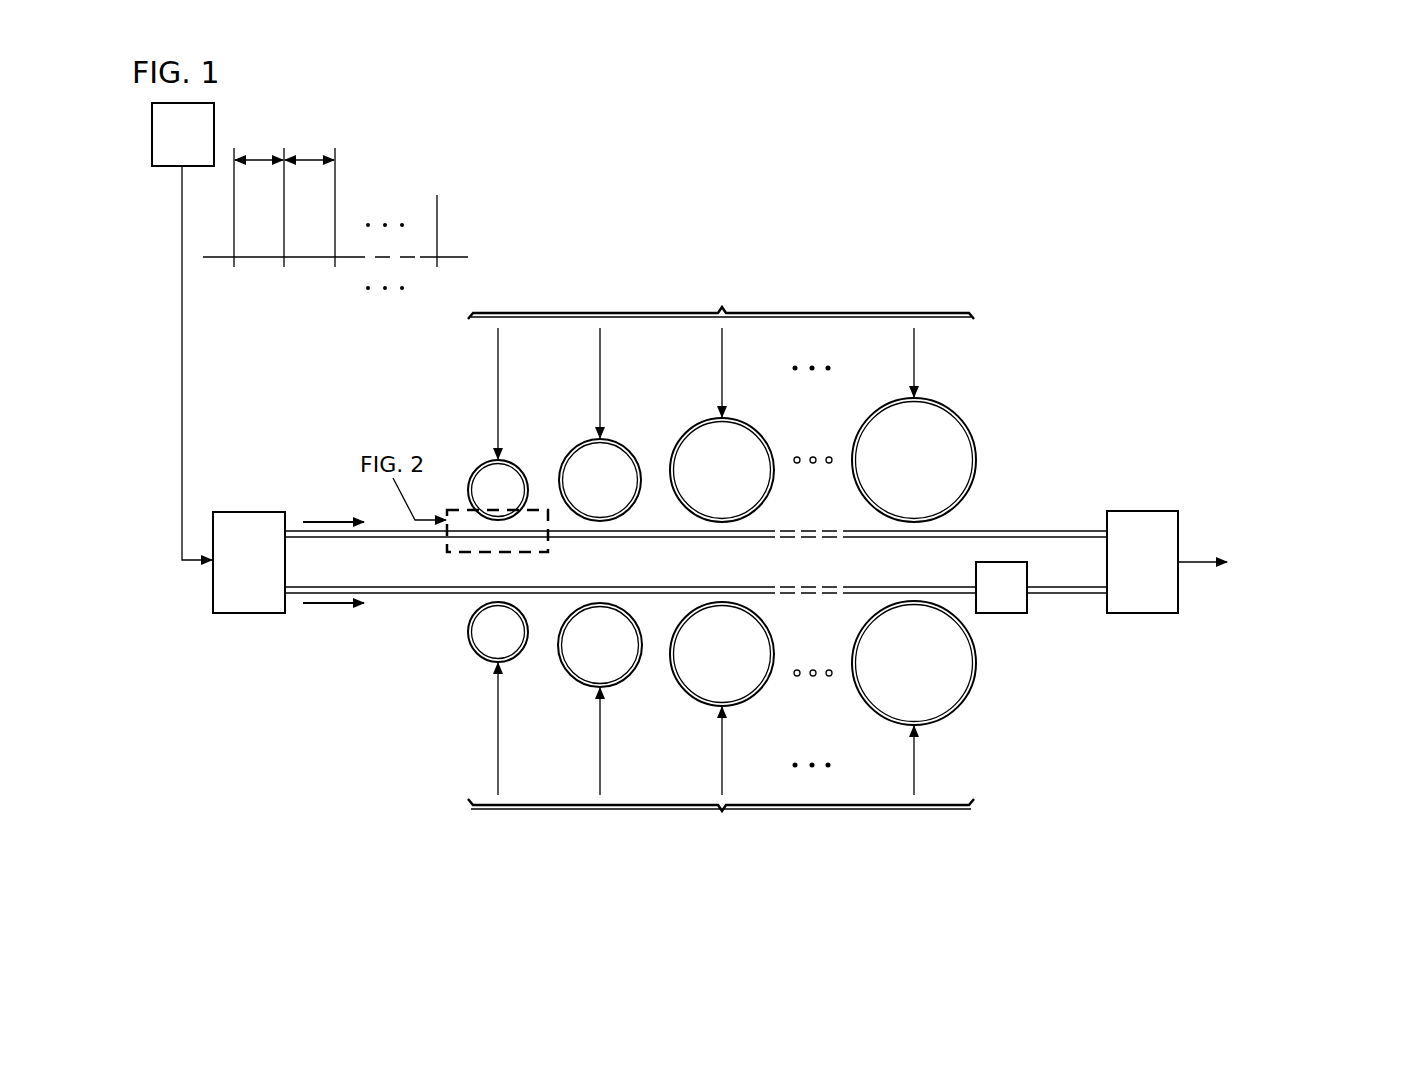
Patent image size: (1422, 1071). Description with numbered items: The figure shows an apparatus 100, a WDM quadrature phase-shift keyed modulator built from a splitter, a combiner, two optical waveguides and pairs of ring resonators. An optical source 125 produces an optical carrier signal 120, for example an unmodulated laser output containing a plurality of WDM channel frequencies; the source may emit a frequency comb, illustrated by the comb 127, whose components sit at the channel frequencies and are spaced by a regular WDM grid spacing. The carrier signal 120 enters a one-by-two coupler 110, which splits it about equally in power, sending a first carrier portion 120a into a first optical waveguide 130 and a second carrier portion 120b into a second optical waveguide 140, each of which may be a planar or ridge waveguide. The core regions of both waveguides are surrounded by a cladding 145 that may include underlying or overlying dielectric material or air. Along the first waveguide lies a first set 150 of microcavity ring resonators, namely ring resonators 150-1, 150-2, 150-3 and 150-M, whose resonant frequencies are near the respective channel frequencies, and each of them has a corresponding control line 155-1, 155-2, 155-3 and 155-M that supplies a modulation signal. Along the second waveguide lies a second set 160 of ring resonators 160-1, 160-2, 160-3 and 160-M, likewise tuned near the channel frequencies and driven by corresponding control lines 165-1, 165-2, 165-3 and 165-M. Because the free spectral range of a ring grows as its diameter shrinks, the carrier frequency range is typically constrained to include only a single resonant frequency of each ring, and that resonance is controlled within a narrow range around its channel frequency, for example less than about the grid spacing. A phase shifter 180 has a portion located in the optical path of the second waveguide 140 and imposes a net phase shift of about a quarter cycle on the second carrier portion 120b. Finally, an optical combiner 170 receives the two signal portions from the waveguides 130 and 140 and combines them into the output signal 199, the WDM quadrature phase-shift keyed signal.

The apparatus 100 is at (977, 232).
The optical source 125 is at (170, 145).
The optical carrier signal 120 is at (182, 365).
The comb 127 is at (366, 143).
The 1×2 coupler 110 is at (236, 572).
The first carrier portion 120a is at (337, 516).
The second carrier portion 120b is at (333, 614).
The cladding 145 is at (709, 574).
The first optical waveguide 130 is at (1047, 529).
The second optical waveguide 140 is at (1047, 595).
The first set of ring resonators 150 is at (721, 301).
The second set of ring resonators 160 is at (721, 821).
The ring resonator 150-1 is at (477, 468).
The ring resonator 150-2 is at (571, 451).
The ring resonator 150-3 is at (685, 434).
The ring resonator 150-M is at (958, 417).
The control line 155-1 is at (498, 394).
The control line 155-2 is at (600, 384).
The control line 155-3 is at (722, 374).
The control line 155-M is at (914, 366).
The ring resonator 160-1 is at (477, 654).
The ring resonator 160-2 is at (571, 675).
The ring resonator 160-3 is at (685, 691).
The ring resonator 160-M is at (958, 707).
The control line 165-1 is at (498, 732).
The control line 165-2 is at (600, 742).
The control line 165-3 is at (722, 752).
The control line 165-M is at (914, 762).
The phase shifter 180 is at (1001, 614).
The optical combiner 170 is at (1130, 572).
The output signal 199 is at (1190, 565).